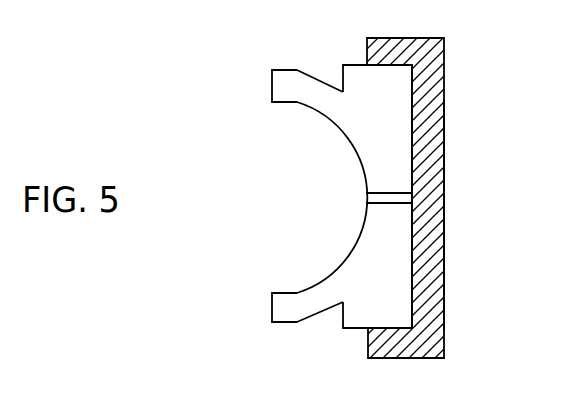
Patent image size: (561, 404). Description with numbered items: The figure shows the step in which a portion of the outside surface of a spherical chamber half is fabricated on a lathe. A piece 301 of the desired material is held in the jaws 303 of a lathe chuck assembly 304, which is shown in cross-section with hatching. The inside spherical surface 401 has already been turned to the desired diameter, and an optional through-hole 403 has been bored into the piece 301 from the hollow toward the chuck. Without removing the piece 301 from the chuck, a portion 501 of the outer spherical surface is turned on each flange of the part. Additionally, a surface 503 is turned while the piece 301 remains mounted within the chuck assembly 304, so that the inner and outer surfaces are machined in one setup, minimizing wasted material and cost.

The piece 301 is at (377, 125).
The jaws 303 is at (383, 345).
The lathe chuck assembly 304 is at (445, 288).
The inside spherical surface 401 is at (343, 136).
The through-hole 403 is at (368, 199).
The portion of the outer spherical surface 501 is at (300, 70).
The surface 503 is at (272, 98).